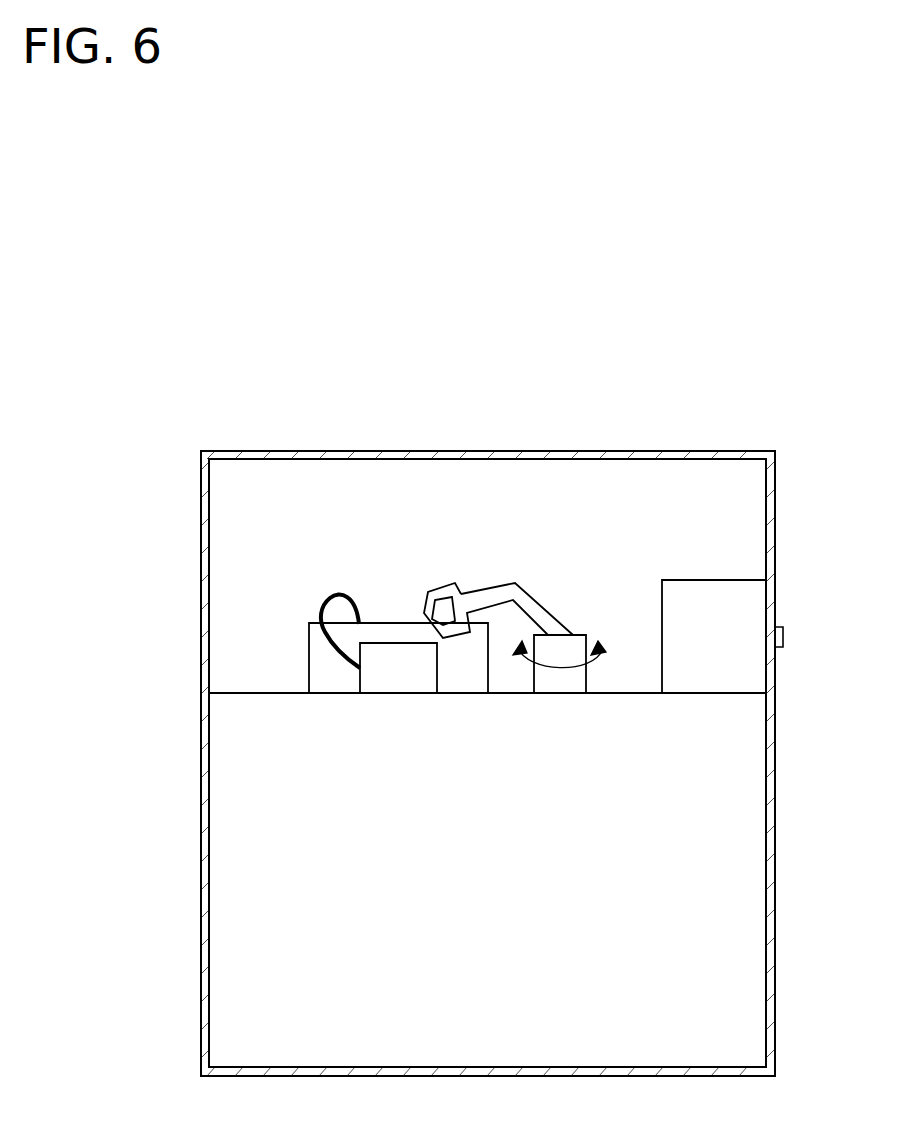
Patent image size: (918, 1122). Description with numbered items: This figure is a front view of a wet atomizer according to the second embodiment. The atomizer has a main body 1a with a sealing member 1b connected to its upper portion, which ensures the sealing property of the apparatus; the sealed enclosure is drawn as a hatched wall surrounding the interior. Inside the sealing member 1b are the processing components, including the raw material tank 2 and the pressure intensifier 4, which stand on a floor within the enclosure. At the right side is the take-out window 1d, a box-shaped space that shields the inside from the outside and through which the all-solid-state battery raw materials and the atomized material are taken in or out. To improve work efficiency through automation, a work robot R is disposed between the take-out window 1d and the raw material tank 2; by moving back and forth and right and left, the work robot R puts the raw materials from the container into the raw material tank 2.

The main body 1a is at (742, 1000).
The sealing member 1b is at (742, 495).
The take-out window 1d is at (722, 682).
The raw material tank 2 is at (415, 682).
The pressure intensifier 4 is at (332, 682).
The work robot R is at (562, 682).